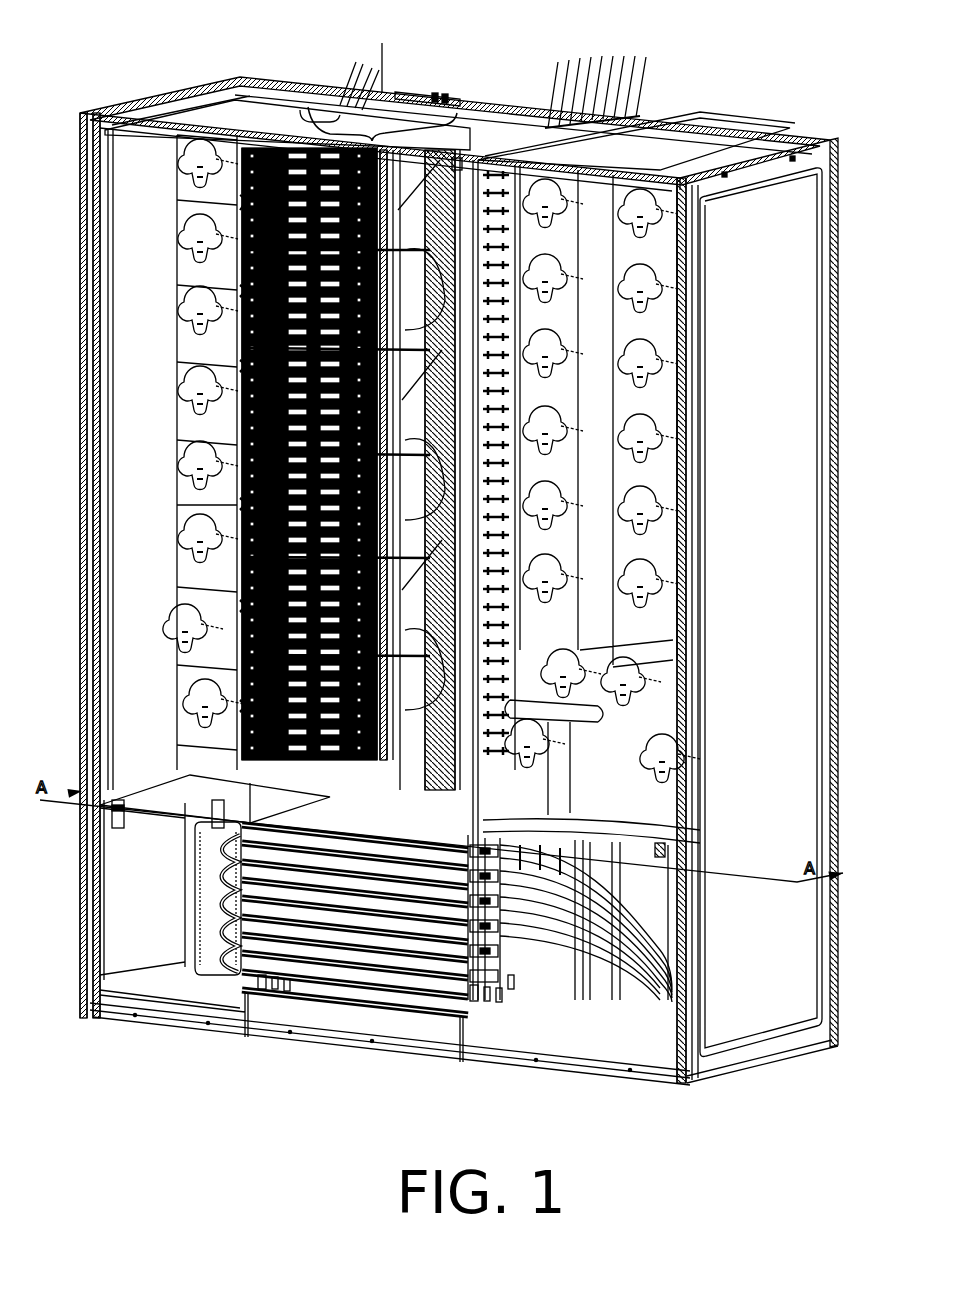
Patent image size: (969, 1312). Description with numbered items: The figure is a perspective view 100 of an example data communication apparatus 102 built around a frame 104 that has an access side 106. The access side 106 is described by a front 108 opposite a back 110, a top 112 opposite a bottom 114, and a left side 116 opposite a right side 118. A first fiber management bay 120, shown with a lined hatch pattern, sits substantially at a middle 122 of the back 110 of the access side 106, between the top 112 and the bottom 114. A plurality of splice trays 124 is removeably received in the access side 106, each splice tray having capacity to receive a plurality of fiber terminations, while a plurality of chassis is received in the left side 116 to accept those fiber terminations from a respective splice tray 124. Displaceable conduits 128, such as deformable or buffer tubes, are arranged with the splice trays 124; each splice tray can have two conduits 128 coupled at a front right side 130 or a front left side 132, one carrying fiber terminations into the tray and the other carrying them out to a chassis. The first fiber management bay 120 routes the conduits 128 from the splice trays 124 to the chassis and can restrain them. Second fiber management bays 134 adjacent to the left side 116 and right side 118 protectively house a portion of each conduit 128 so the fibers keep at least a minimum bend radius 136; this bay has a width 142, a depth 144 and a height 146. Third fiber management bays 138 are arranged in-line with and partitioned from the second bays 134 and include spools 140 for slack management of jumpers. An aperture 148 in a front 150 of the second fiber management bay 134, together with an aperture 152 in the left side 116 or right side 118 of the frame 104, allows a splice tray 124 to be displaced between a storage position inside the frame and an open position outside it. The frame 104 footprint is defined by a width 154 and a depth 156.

The perspective view 100 is at (840, 1092).
The data communication apparatus 102 is at (137, 50).
The frame 104 is at (440, 98).
The access side 106 is at (457, 163).
The front 108 is at (483, 828).
The back 110 is at (570, 800).
The top 112 is at (350, 113).
The bottom 114 is at (392, 1000).
The left side 116 is at (310, 113).
The right side 118 is at (410, 119).
The first fiber management bay 120 is at (437, 808).
The middle 122 is at (433, 775).
The splice trays 124 is at (193, 900).
The displaceable conduits 128 is at (515, 978).
The front right side 130 is at (467, 993).
The front left side 132 is at (247, 977).
The second fiber management bays 134 is at (90, 898).
The minimum bend radius 136 is at (665, 910).
The third fiber management bays 138 is at (205, 103).
The spools 140 is at (187, 455).
The width 142 is at (690, 1093).
The depth 144 is at (882, 1048).
The height 146 is at (882, 850).
The aperture 148 is at (133, 940).
The front 150 is at (120, 980).
The aperture 152 is at (600, 893).
The width 154 is at (463, 1068).
The depth 156 is at (380, 57).